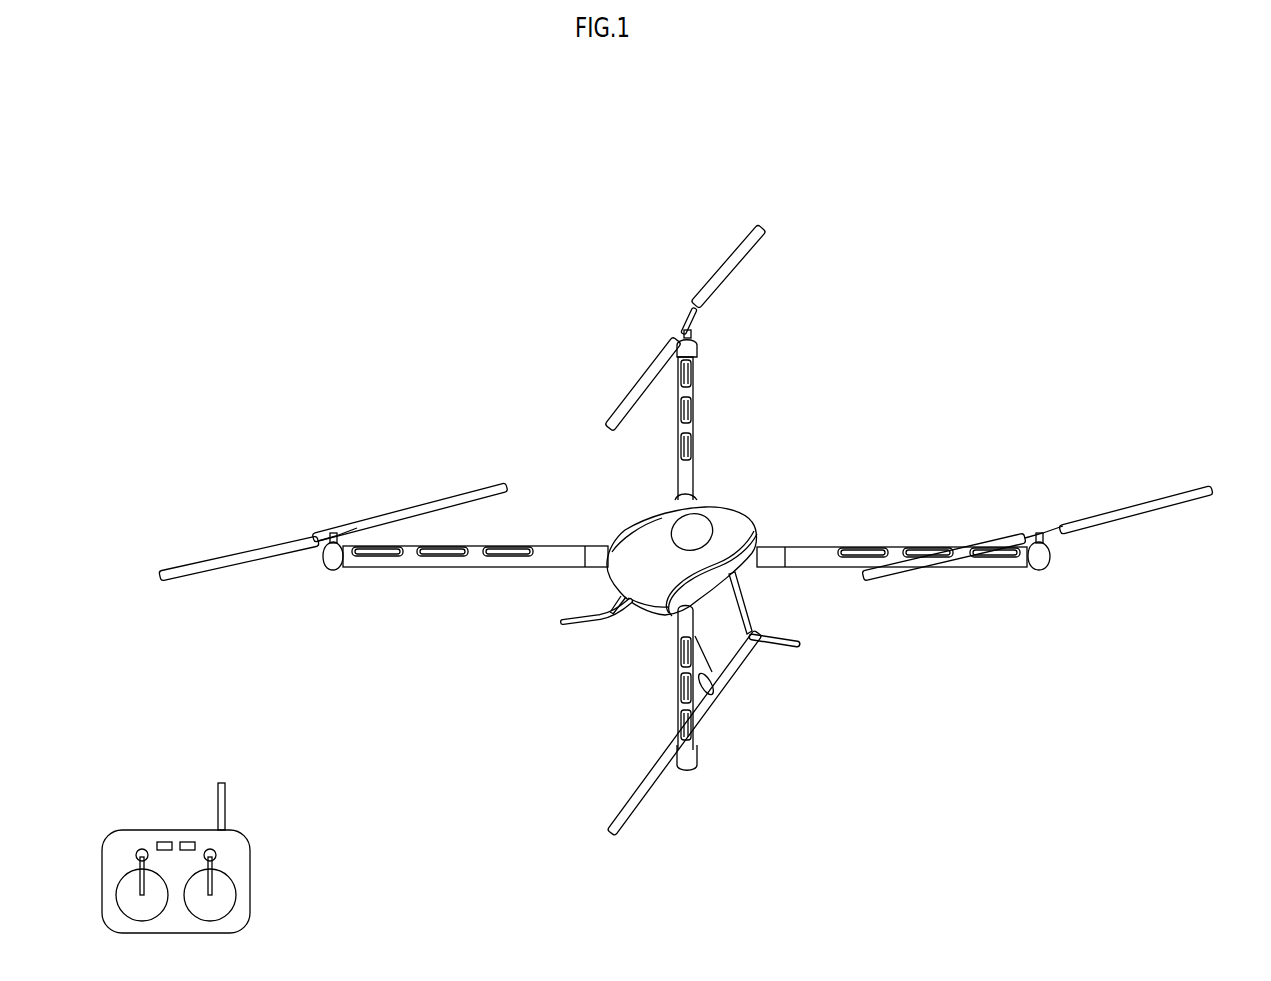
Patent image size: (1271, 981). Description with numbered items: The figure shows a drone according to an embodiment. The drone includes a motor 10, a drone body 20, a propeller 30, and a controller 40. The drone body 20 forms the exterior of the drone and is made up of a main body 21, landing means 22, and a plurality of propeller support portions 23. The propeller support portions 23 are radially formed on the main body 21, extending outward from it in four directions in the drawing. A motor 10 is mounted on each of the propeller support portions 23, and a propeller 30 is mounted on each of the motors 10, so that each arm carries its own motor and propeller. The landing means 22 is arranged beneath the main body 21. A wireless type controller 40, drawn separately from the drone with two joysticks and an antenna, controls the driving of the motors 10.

The motor 10 is at (686, 529).
The drone body 20 is at (705, 521).
The main body 21 is at (733, 522).
The landing means 22 is at (748, 614).
The propeller support portion 23 is at (677, 634).
The propeller 30 is at (624, 787).
The controller 40 is at (280, 876).